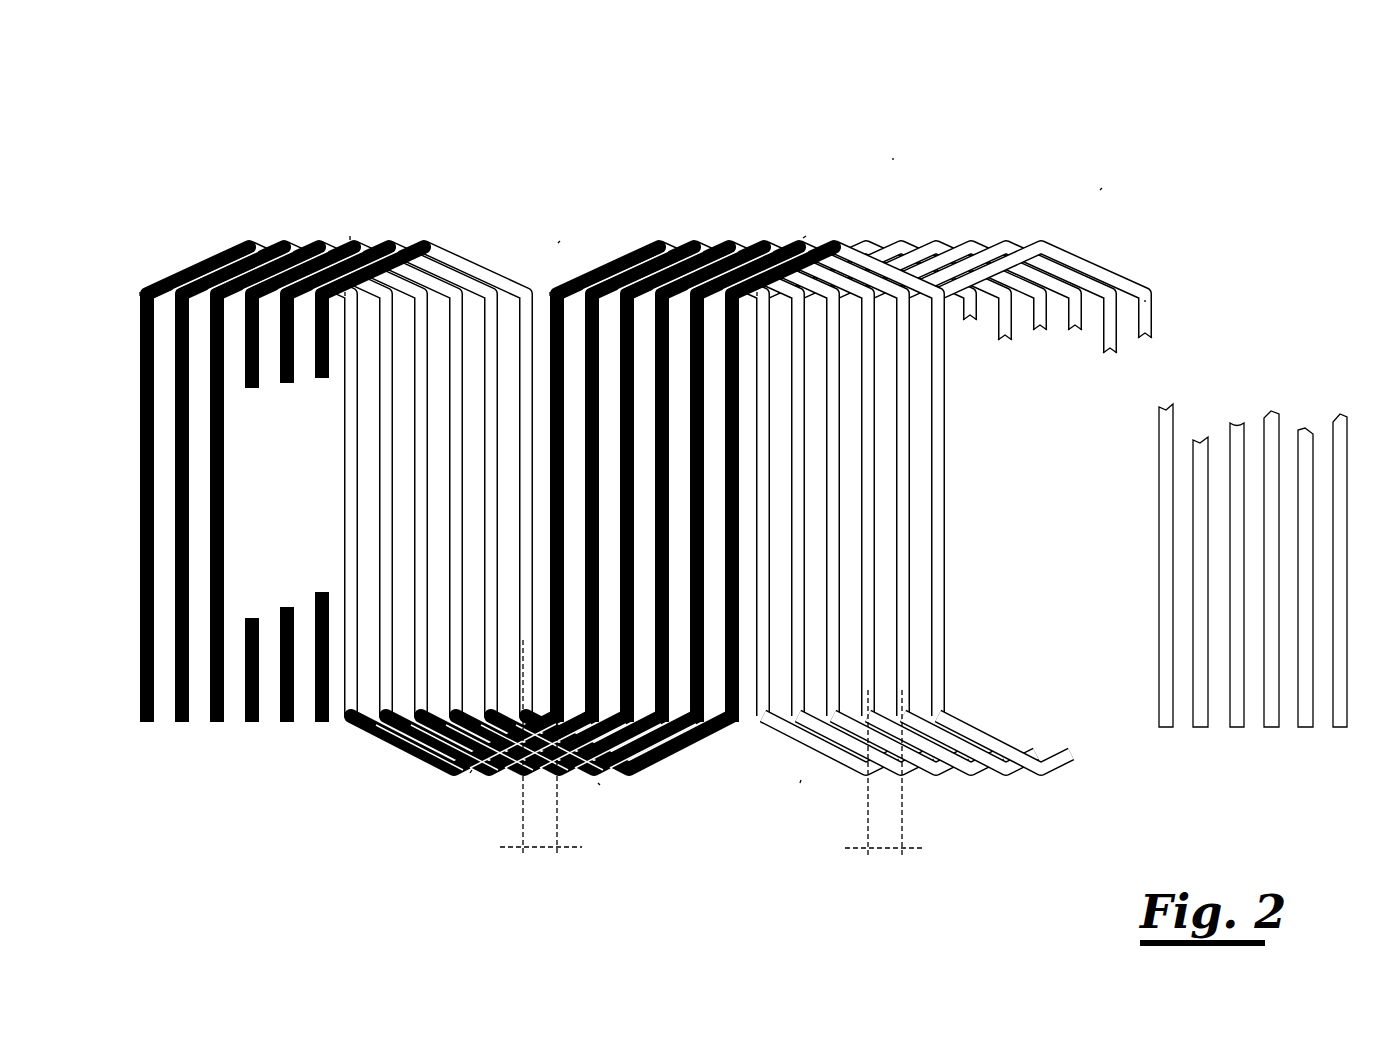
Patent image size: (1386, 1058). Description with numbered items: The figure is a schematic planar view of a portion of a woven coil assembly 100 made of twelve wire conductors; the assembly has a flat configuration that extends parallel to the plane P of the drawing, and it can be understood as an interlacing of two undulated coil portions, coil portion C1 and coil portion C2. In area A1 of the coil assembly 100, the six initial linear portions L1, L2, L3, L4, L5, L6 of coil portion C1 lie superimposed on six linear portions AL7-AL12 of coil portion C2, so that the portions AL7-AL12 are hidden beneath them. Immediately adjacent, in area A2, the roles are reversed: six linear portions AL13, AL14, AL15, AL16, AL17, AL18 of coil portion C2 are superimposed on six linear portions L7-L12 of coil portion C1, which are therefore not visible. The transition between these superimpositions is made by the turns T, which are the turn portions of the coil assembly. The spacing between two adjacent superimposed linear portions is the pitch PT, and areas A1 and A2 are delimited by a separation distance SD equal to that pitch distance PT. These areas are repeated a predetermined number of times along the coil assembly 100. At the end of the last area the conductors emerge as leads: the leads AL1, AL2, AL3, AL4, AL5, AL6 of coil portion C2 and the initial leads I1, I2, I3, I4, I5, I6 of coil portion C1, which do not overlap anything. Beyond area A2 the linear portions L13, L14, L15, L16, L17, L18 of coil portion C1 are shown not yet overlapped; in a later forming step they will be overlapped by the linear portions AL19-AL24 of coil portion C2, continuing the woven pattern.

The woven coil assembly 100 is at (893, 153).
The coil portion C1 is at (1107, 177).
The coil portion C2 is at (218, 185).
The area A1 is at (505, 210).
The area A2 is at (762, 213).
The turns T is at (350, 240).
The plane P is at (1209, 262).
The lead AL1 is at (145, 722).
The lead AL2 is at (180, 722).
The lead AL3 is at (215, 722).
The lead AL4 is at (250, 722).
The lead AL5 is at (285, 722).
The lead AL6 is at (320, 722).
The initial linear portion L1 is at (351, 398).
The initial linear portion L2 is at (385, 422).
The initial linear portion L3 is at (420, 450).
The initial linear portion L4 is at (455, 483).
The initial linear portion L5 is at (490, 521).
The initial linear portion L6 is at (525, 557).
The linear portions AL7-AL12 is at (420, 795).
The linear portions L7-L12 is at (672, 808).
The linear portion AL13 is at (565, 373).
The linear portion AL14 is at (598, 398).
The linear portion AL15 is at (633, 422).
The linear portion AL16 is at (668, 450).
The linear portion AL17 is at (703, 493).
The linear portion AL18 is at (738, 523).
The linear portion L13 is at (767, 605).
The linear portion L14 is at (800, 625).
The linear portion L15 is at (835, 645).
The linear portion L16 is at (870, 668).
The linear portion L17 is at (905, 688).
The linear portion L18 is at (940, 713).
The linear portions AL19-AL24 is at (950, 778).
The separation distance SD is at (541, 774).
The pitch PT is at (885, 798).
The initial lead I1 is at (1166, 727).
The initial lead I2 is at (1200, 727).
The initial lead I3 is at (1237, 727).
The initial lead I4 is at (1271, 727).
The initial lead I5 is at (1305, 727).
The initial lead I6 is at (1340, 727).